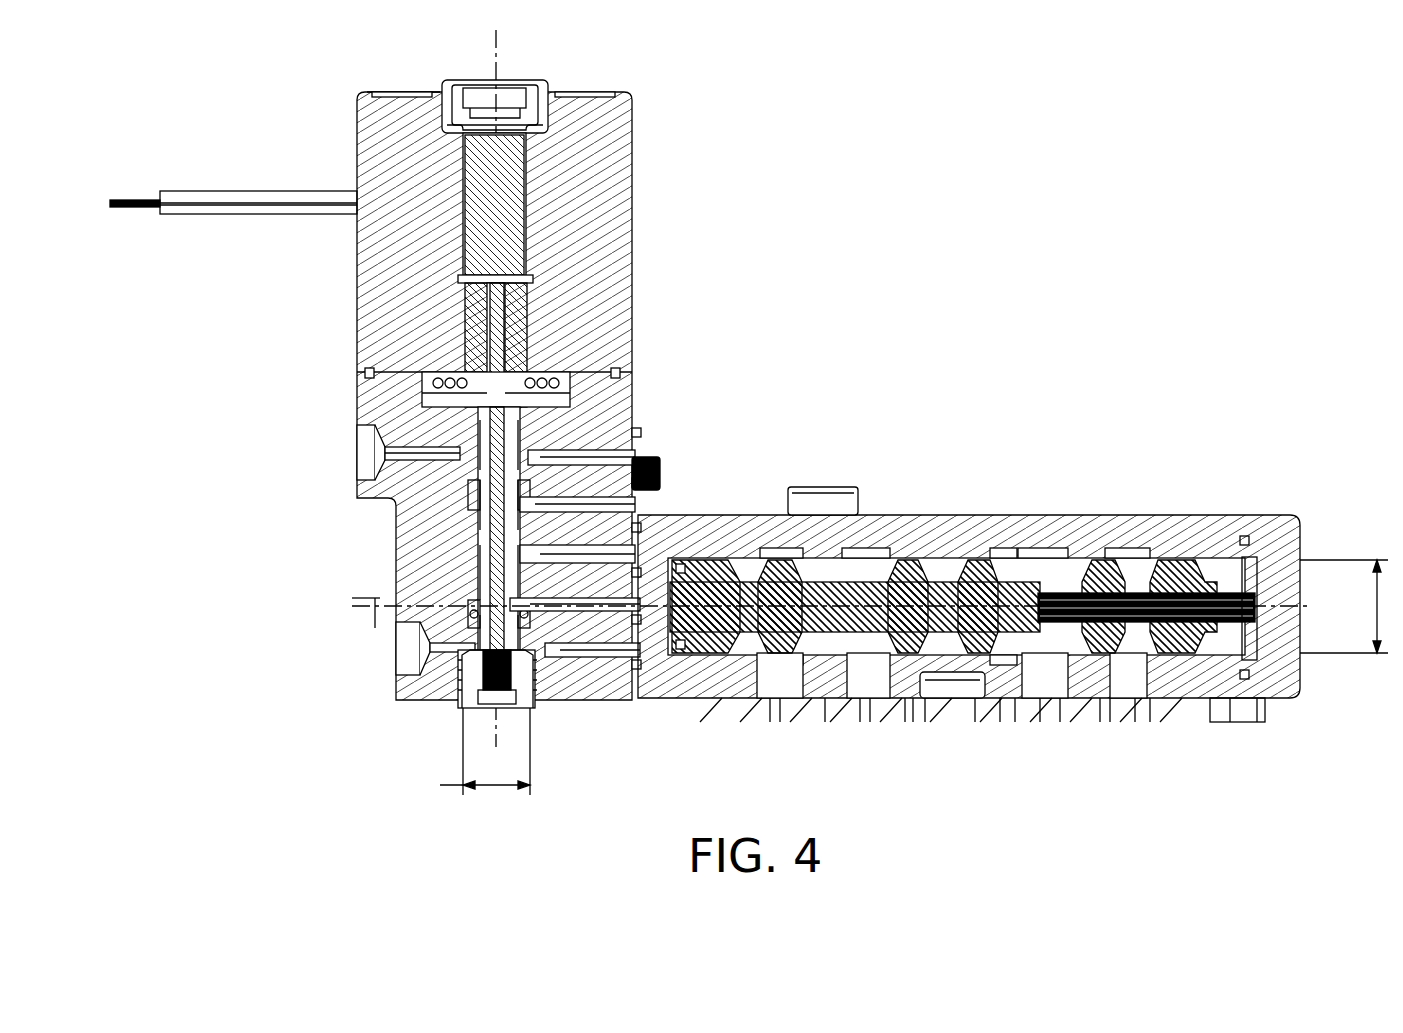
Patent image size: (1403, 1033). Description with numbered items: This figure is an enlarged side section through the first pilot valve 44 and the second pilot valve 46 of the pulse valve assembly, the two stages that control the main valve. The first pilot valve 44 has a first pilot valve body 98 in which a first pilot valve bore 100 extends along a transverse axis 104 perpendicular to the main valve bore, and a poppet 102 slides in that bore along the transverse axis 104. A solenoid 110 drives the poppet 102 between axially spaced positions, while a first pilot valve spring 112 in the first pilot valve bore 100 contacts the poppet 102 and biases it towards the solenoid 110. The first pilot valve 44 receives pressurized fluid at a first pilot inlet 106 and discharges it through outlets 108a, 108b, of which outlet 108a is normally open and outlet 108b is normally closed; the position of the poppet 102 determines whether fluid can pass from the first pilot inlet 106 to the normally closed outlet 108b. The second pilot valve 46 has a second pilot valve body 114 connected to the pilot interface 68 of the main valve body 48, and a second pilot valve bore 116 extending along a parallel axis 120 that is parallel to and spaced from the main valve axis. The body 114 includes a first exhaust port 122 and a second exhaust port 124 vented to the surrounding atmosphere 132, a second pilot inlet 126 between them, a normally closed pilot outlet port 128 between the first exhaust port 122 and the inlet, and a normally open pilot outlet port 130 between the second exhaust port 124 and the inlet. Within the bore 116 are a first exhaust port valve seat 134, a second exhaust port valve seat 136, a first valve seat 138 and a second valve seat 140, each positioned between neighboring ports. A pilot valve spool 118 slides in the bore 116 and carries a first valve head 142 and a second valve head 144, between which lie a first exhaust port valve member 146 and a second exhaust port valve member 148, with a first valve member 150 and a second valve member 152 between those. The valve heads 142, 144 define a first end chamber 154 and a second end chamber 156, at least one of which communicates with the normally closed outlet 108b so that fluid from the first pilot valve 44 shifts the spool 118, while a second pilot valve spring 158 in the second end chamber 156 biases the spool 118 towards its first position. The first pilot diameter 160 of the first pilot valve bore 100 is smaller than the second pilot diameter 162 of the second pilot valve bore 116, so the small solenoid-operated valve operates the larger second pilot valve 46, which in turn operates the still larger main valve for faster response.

The first pilot valve 44 is at (634, 181).
The second pilot valve 46 is at (1168, 513).
The main valve body 48 is at (1178, 712).
The pilot interface 68 is at (1196, 714).
The first pilot valve body 98 is at (410, 540).
The first pilot valve bore 100 is at (425, 562).
The poppet 102 is at (395, 515).
The transverse axis 104 is at (497, 50).
The first pilot inlet 106 is at (620, 555).
The normally open outlet 108a is at (620, 612).
The normally closed outlet 108b is at (600, 475).
The solenoid 110 is at (372, 288).
The first pilot valve spring 112 is at (488, 672).
The second pilot valve body 114 is at (1055, 530).
The second pilot valve bore 116 is at (956, 549).
The pilot valve spool 118 is at (862, 575).
The parallel axis 120 is at (372, 607).
The first exhaust port 122 is at (760, 710).
The second exhaust port 124 is at (1125, 710).
The second pilot inlet 126 is at (947, 710).
The normally closed pilot outlet port 128 is at (870, 715).
The normally open pilot outlet port 130 is at (1043, 710).
The surrounding atmosphere 132 is at (1009, 315).
The first exhaust port valve seat 134 is at (795, 715).
The second exhaust port valve seat 136 is at (1098, 708).
The first valve seat 138 is at (908, 700).
The second valve seat 140 is at (1000, 710).
The first valve head 142 is at (748, 560).
The second valve head 144 is at (1175, 560).
The first exhaust port valve member 146 is at (792, 560).
The second exhaust port valve member 148 is at (1095, 560).
The first valve member 150 is at (905, 560).
The second valve member 152 is at (985, 560).
The first end chamber 154 is at (675, 660).
The second end chamber 156 is at (1228, 570).
The second pilot valve spring 158 is at (1265, 700).
The first pilot diameter 160 is at (467, 752).
The second pilot diameter 162 is at (1347, 606).